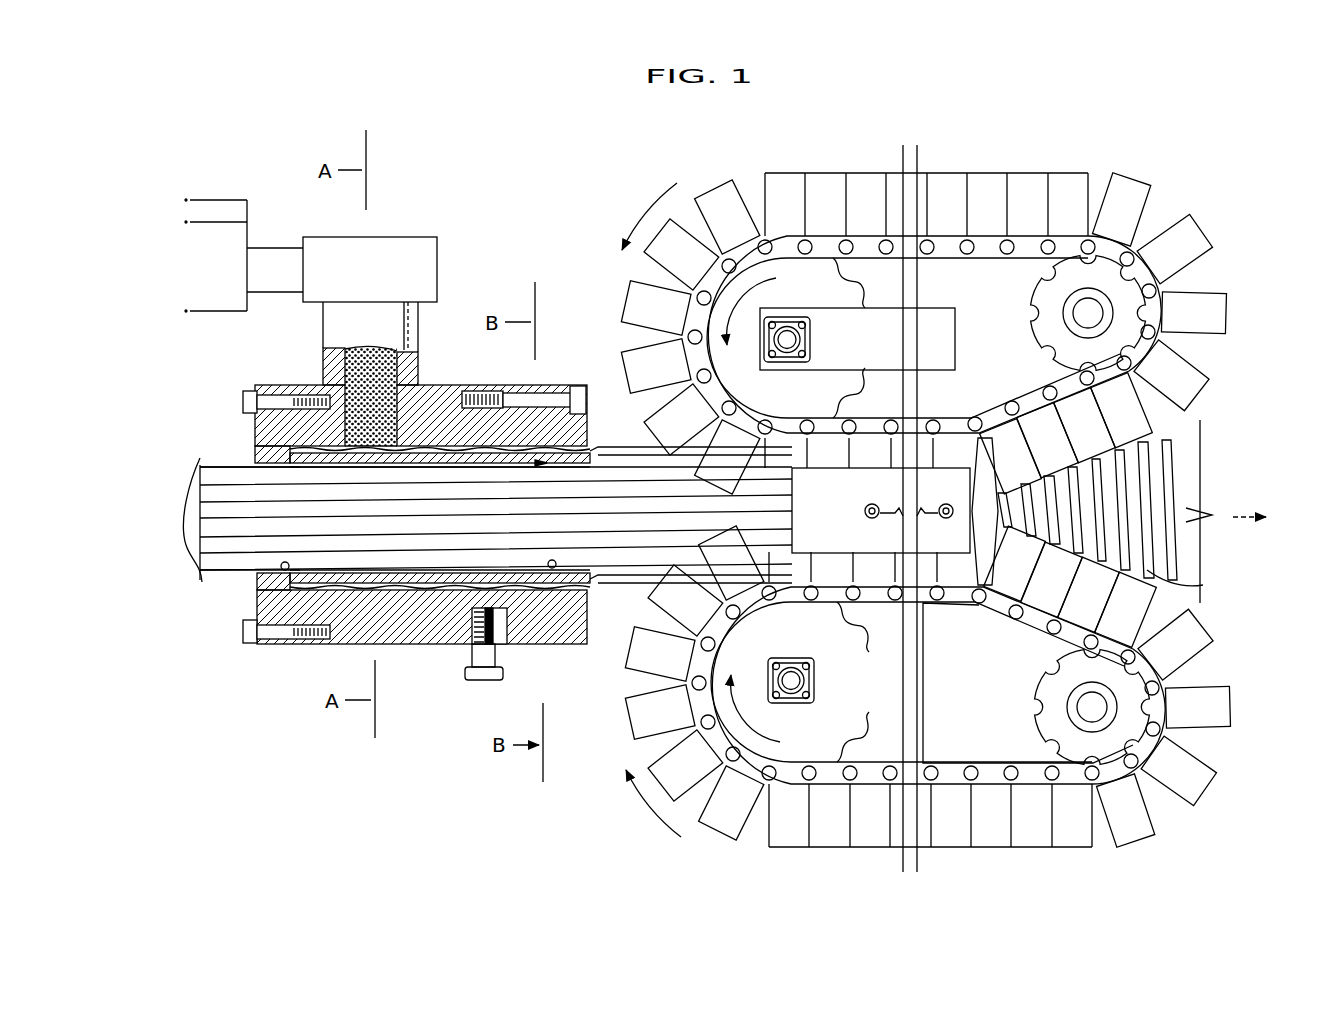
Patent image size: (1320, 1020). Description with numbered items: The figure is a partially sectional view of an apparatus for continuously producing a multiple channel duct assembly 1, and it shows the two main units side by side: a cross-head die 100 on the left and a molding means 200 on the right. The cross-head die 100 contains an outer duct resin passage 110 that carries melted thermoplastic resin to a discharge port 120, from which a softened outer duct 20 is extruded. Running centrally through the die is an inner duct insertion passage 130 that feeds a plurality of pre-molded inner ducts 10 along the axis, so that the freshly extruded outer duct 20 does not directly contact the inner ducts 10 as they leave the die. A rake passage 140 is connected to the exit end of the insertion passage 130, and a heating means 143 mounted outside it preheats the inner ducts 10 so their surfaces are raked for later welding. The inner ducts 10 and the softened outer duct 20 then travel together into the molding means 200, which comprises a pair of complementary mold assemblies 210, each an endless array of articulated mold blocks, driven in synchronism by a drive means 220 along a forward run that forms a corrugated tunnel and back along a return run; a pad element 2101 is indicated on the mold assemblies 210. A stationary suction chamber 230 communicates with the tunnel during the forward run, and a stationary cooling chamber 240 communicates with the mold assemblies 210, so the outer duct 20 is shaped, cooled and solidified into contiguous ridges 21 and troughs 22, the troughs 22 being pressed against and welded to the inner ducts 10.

The multiple channel duct assembly 1 is at (160, 411).
The inner ducts 10 is at (223, 473).
The outer duct 20 is at (601, 444).
The ridges 21 is at (1177, 462).
The troughs 22 is at (1167, 490).
The cross-head die 100 is at (397, 427).
The outer duct resin passage 110 is at (423, 590).
The discharge port 120 is at (592, 585).
The inner duct insertion passage 130 is at (285, 570).
The rake passage 140 is at (552, 567).
The heating means 143 is at (566, 413).
The molding means 200 is at (958, 455).
The mold assemblies 210 is at (1200, 224).
The pad gripping surface 2101 is at (1203, 390).
The drive means 220 is at (792, 270).
The stationary suction chamber 230 is at (810, 537).
The stationary cooling chamber 240 is at (952, 482).